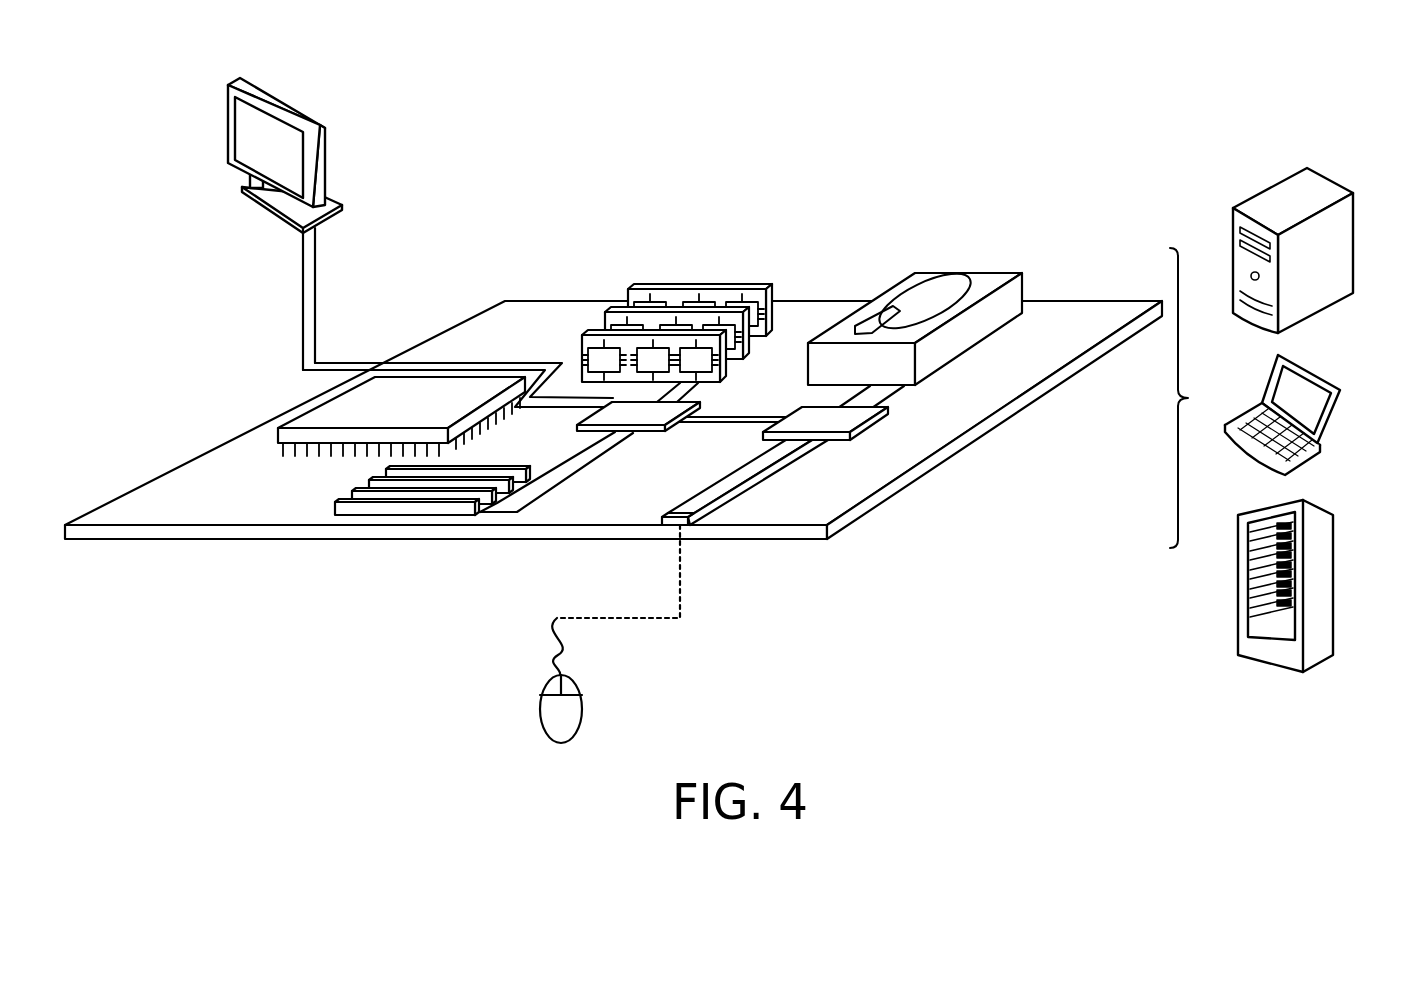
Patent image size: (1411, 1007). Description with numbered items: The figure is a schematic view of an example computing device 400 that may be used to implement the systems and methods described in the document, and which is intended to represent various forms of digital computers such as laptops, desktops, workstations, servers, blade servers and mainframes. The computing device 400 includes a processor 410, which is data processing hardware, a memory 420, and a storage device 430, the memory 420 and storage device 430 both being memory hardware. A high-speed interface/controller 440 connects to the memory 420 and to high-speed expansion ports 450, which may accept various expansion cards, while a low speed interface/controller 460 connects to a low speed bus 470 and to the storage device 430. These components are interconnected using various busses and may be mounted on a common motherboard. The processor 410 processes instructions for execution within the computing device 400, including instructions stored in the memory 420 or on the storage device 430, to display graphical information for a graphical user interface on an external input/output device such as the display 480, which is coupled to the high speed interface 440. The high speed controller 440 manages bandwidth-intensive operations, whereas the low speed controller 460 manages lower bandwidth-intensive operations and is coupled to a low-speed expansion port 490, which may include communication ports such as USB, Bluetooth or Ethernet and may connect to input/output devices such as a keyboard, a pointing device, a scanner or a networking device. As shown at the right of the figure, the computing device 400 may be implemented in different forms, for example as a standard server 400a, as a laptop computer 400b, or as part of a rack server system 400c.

The computing device 400 is at (784, 146).
The standard server 400a is at (1268, 190).
The laptop computer 400b is at (1318, 376).
The rack server system 400c is at (1330, 568).
The processor 410 is at (278, 428).
The memory 420 is at (697, 292).
The storage device 430 is at (962, 272).
The high-speed interface/controller 440 is at (644, 431).
The high-speed expansion ports 450 is at (335, 509).
The low speed interface/controller 460 is at (813, 418).
The low speed bus 470 is at (770, 476).
The display 480 is at (228, 130).
The low-speed expansion port 490 is at (700, 539).